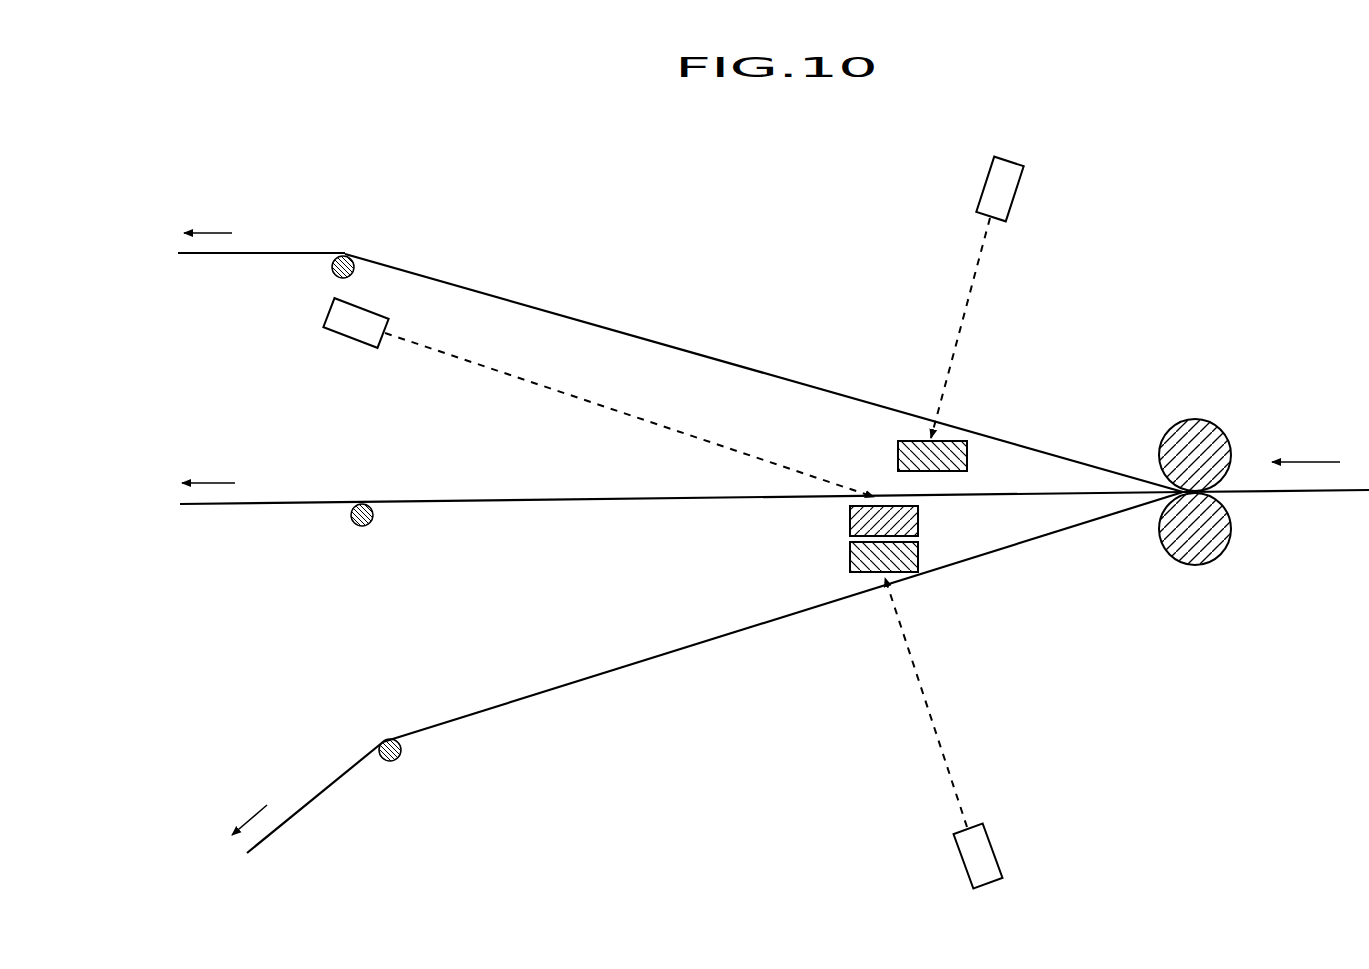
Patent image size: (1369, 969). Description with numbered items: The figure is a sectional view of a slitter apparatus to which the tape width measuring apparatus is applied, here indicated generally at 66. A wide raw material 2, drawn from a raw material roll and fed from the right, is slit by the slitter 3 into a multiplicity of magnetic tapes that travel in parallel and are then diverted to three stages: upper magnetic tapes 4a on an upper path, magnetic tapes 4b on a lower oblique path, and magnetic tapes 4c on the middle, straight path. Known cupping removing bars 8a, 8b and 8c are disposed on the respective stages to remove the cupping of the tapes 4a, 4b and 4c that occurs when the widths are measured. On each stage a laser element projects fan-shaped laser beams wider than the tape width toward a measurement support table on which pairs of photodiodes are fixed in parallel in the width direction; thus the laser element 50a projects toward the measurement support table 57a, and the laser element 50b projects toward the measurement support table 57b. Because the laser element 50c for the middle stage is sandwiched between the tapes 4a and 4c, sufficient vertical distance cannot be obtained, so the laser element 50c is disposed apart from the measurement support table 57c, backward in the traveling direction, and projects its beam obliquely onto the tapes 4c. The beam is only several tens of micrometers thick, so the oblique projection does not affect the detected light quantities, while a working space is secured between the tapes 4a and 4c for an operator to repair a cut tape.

The raw material 2 is at (1332, 496).
The slitter 3 is at (1207, 565).
The upper magnetic tapes 4a is at (447, 279).
The middle magnetic tapes 4b is at (525, 702).
The lower magnetic tapes 4c is at (457, 503).
The cupping removing bar 8a is at (333, 262).
The cupping removing bar 8b is at (387, 762).
The cupping removing bar 8c is at (351, 517).
The laser element 50a is at (1012, 183).
The laser element 50b is at (987, 853).
The laser element 50c is at (345, 330).
The measurement support table 57a is at (898, 452).
The measurement support table 57b is at (850, 562).
The measurement support table 57c is at (850, 517).
The web dividing apparatus 66 is at (847, 256).